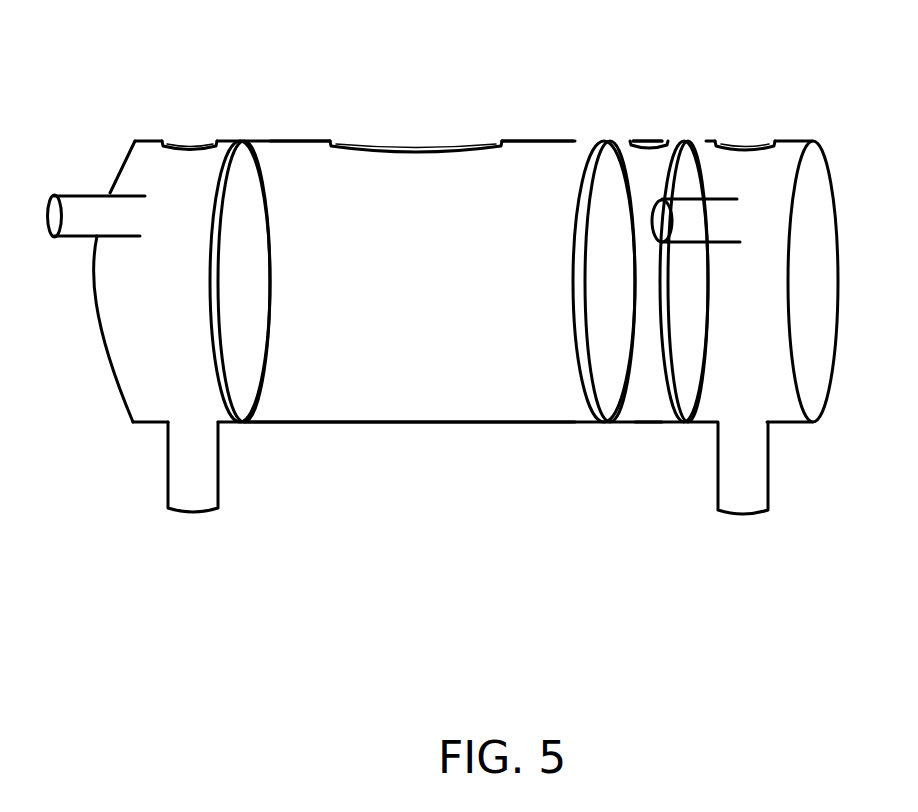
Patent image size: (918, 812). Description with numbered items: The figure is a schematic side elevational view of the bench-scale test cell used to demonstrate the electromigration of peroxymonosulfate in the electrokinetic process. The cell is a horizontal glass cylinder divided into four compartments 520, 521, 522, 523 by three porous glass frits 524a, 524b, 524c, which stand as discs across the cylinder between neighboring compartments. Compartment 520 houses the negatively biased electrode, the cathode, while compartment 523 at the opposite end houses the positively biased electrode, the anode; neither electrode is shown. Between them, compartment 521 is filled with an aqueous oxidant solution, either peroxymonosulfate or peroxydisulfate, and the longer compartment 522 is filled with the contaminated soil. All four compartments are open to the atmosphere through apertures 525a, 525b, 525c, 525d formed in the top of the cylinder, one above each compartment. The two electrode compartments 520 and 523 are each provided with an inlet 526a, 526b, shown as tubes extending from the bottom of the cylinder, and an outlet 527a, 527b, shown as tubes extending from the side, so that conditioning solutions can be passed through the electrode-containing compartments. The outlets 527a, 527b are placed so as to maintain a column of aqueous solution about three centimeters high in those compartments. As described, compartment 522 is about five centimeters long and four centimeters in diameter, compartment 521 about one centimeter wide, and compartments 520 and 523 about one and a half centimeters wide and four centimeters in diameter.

The compartment 520 is at (772, 370).
The compartment 521 is at (641, 375).
The compartment 522 is at (424, 332).
The compartment 523 is at (153, 330).
The porous glass frit 524a is at (236, 141).
The porous glass frit 524b is at (605, 141).
The porous glass frit 524c is at (687, 141).
The aperture 525a is at (190, 145).
The aperture 525b is at (408, 152).
The aperture 525c is at (645, 145).
The aperture 525d is at (752, 145).
The inlet 526a is at (193, 512).
The inlet 526b is at (745, 518).
The outlet 527a is at (65, 192).
The outlet 527b is at (710, 243).